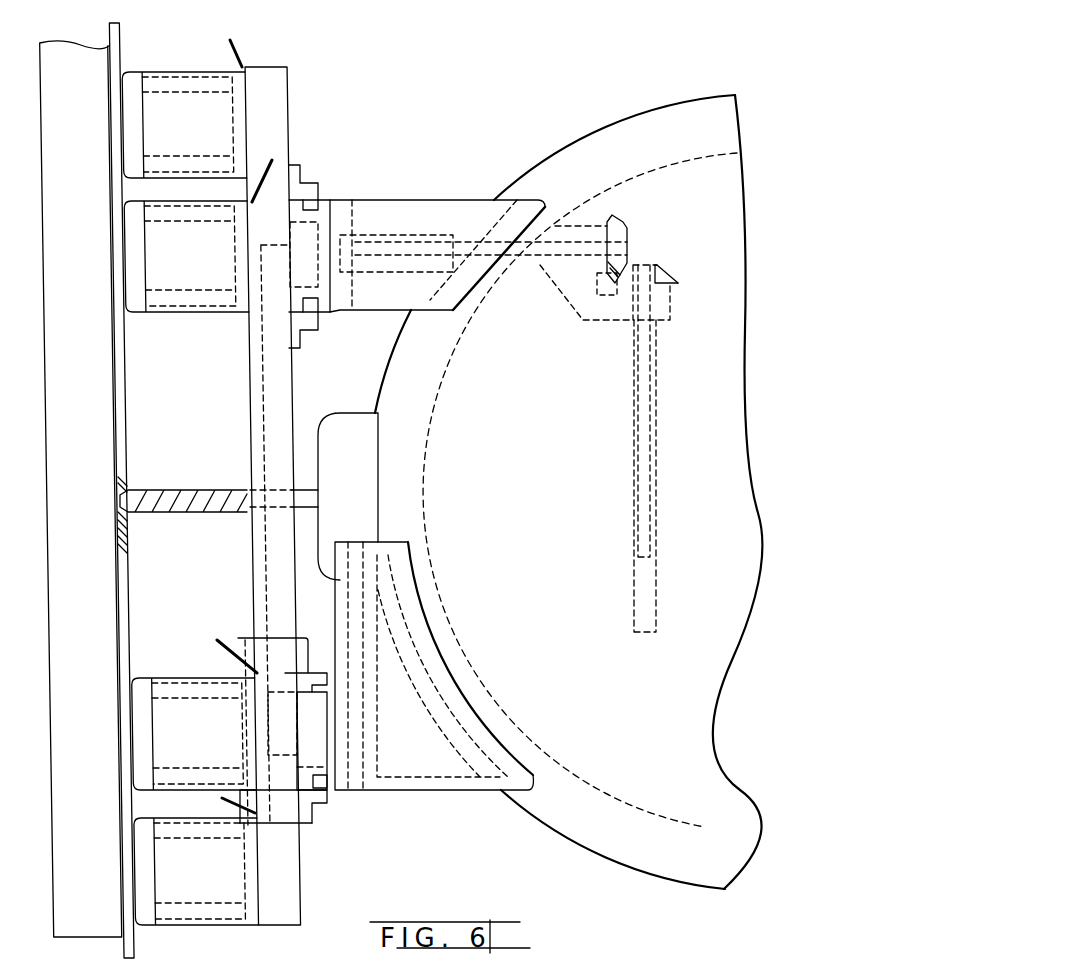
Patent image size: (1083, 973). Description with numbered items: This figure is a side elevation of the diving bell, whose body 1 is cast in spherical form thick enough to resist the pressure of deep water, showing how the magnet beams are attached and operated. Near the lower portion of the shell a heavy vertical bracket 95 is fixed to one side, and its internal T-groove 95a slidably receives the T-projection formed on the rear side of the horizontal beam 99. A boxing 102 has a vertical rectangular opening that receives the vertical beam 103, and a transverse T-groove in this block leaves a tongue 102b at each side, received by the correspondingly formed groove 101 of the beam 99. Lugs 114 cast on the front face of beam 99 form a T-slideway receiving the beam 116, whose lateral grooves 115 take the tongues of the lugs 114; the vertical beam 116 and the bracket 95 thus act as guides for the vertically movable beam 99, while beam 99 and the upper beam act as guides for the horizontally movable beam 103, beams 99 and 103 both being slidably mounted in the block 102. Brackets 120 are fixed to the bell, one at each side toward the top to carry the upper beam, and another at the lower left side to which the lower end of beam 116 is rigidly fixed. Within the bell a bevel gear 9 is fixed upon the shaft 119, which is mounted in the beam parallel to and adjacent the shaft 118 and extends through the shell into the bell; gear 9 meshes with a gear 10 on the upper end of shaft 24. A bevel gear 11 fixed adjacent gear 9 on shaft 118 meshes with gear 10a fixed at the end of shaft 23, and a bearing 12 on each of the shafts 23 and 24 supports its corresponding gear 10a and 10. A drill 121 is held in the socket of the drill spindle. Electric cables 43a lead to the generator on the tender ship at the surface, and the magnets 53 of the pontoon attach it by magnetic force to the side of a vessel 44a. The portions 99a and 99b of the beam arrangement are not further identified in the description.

The body of diving bell 1 is at (578, 150).
The bevel gear 9 is at (623, 222).
The gear 10 is at (670, 268).
The gear 10a is at (667, 265).
The bevel gear 11 is at (625, 228).
The bearing 12 is at (670, 305).
The shaft 23 is at (637, 425).
The shaft 24 is at (633, 393).
The electric cables 43a is at (242, 58).
The side of a vessel 44a is at (163, 455).
The magnet 53 is at (128, 92).
The vertical bracket 95 is at (437, 795).
The internal T-groove 95a is at (363, 618).
The horizontal beam 99 is at (333, 778).
The holder lug 99a is at (348, 658).
The holder recess 99b is at (357, 720).
The groove 101 is at (318, 787).
The boxing 102 is at (280, 810).
The tongue 102b is at (317, 782).
The vertical beam 103 is at (267, 120).
The lugs 114 is at (307, 202).
The lateral grooves 115 is at (314, 201).
The vertical beam 116 is at (322, 237).
The shaft 118 is at (392, 247).
The shaft 119 is at (343, 262).
The bracket 120 is at (433, 212).
The drill 121 is at (157, 493).